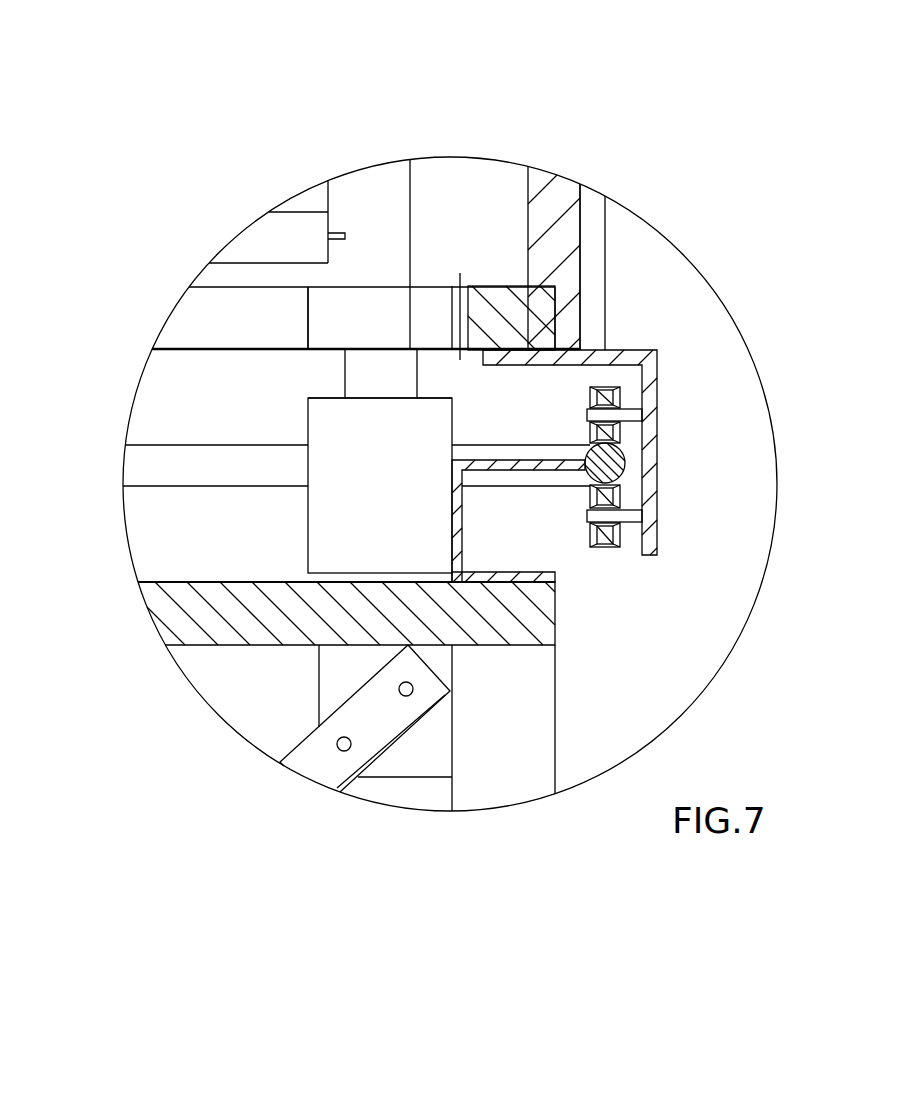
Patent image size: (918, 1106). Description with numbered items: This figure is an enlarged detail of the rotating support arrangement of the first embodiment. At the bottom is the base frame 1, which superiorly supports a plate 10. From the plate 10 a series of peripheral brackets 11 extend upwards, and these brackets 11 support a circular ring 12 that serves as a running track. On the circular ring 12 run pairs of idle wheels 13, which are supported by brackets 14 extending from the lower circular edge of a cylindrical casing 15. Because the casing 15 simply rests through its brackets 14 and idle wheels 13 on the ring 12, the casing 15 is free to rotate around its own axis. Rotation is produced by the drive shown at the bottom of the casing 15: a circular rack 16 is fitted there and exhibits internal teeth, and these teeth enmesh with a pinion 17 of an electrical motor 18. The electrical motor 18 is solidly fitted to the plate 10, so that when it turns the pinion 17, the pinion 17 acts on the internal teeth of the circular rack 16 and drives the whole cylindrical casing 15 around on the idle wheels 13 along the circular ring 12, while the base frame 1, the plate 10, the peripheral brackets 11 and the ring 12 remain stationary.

The base frame 1 is at (528, 738).
The plate 10 is at (528, 617).
The peripheral brackets 11 is at (455, 493).
The circular ring 12 is at (617, 470).
The idle wheels 13 is at (610, 385).
The brackets 14 is at (653, 463).
The cylindrical casing 15 is at (558, 222).
The circular rack 16 is at (497, 307).
The pinion 17 is at (377, 310).
The electrical motor 18 is at (343, 527).